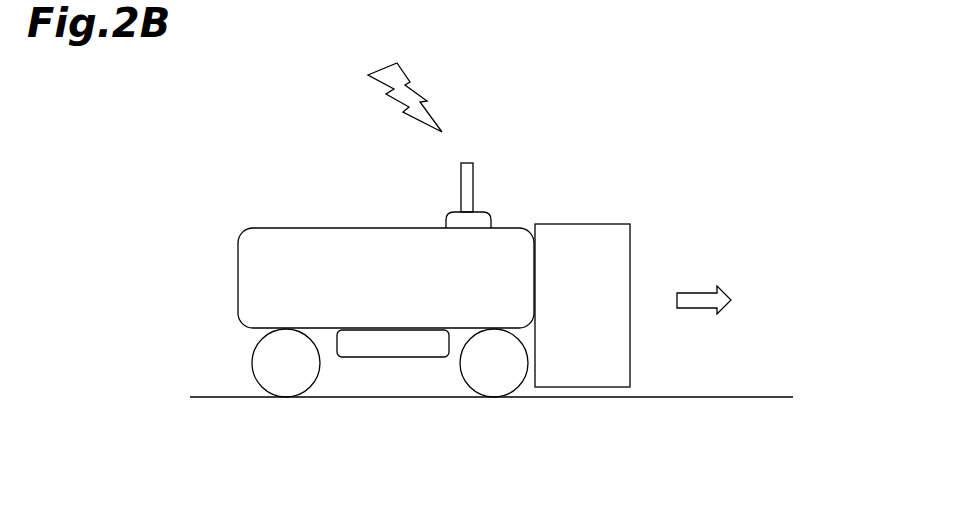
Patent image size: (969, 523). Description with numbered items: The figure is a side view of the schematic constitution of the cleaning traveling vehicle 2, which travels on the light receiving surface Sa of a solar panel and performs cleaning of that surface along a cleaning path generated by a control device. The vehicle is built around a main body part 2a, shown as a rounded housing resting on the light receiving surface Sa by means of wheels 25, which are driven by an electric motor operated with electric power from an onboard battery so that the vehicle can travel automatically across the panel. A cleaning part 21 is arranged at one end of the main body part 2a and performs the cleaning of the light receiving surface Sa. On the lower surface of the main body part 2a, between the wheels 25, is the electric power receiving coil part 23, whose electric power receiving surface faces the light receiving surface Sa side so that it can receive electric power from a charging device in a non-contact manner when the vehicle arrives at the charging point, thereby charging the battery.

The cleaning traveling vehicle 2 is at (657, 153).
The main body part 2a is at (293, 228).
The cleaning part 21 is at (631, 252).
The electric power receiving coil part 23 is at (373, 358).
The wheels 25 is at (253, 376).
The light receiving surface Sa is at (722, 397).